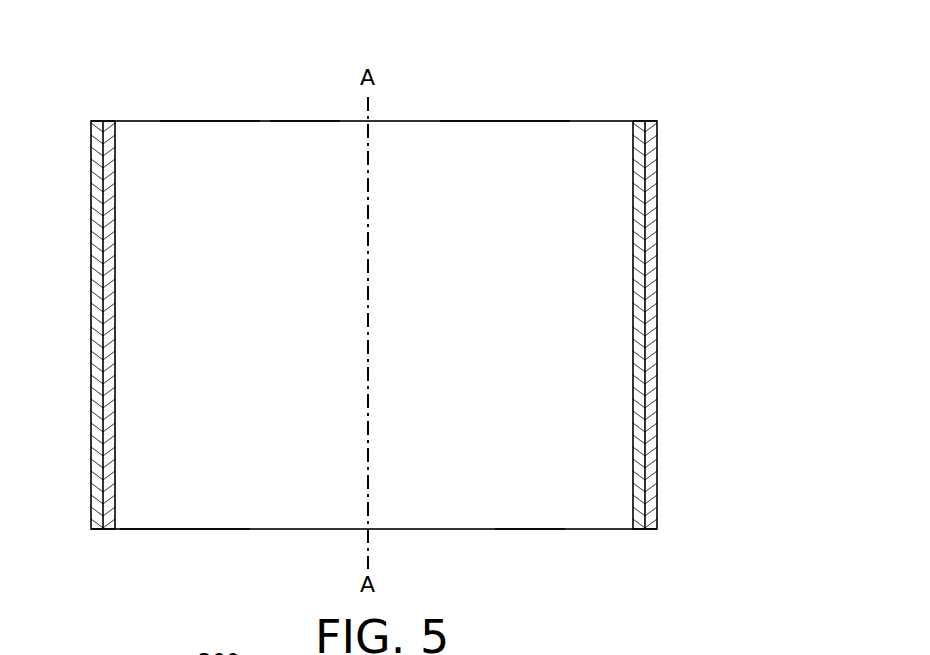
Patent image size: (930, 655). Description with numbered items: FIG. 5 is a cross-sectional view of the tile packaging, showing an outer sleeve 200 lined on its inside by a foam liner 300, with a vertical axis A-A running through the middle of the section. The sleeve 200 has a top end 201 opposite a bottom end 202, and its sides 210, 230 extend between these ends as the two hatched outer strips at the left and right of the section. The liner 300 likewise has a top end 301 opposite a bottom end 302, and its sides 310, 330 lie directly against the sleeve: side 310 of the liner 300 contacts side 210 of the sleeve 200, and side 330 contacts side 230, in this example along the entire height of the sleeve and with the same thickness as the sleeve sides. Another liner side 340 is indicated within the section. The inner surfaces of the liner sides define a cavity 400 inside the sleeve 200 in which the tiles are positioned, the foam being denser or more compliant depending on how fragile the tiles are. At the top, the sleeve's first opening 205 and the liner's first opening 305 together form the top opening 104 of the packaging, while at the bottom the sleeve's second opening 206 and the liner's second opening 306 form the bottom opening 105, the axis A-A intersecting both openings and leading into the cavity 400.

The sleeve 200 is at (657, 334).
The liner 300 is at (633, 503).
The side of liner 310 is at (640, 190).
The side of sleeve 210 is at (651, 137).
The side of sleeve 230 is at (91, 165).
The side of liner 330 is at (110, 152).
The top end of liner 301 is at (112, 121).
The bottom end of liner 302 is at (110, 529).
The top end of sleeve 201 is at (647, 121).
The bottom end of sleeve 202 is at (652, 529).
The first opening of liner 305 is at (189, 121).
The top opening 104 is at (232, 121).
The side of liner 340 is at (312, 162).
The first opening of sleeve 205 is at (476, 121).
The cavity 400 is at (527, 190).
The bottom opening 105 is at (150, 531).
The second opening of liner 306 is at (215, 531).
The second opening of sleeve 206 is at (530, 531).